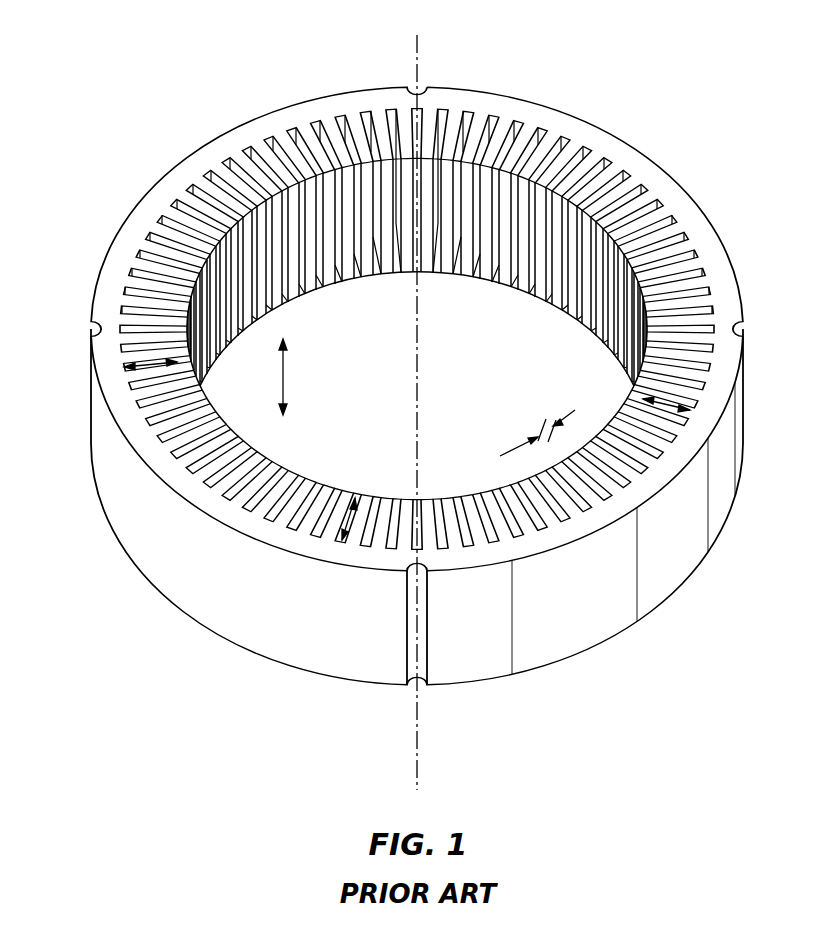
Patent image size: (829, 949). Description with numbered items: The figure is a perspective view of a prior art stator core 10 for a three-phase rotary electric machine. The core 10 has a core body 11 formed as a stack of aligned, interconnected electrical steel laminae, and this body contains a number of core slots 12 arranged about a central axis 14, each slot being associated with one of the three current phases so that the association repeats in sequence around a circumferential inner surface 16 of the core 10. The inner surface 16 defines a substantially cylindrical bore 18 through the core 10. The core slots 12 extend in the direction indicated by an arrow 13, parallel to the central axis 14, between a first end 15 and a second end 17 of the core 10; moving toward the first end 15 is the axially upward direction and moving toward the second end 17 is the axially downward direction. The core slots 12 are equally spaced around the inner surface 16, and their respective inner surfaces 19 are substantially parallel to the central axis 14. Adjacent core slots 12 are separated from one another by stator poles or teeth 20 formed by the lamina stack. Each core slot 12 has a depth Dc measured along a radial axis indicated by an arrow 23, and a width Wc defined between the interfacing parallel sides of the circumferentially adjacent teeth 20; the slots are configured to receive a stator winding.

The stator core 10 is at (136, 72).
The core body 11 is at (303, 640).
The core slots 12 is at (127, 250).
The arrow 13 is at (285, 378).
The central axis 14 is at (430, 714).
The first end 15 is at (587, 143).
The circumferential inner surface 16 is at (369, 246).
The second end 17 is at (636, 628).
The bore 18 is at (455, 371).
The inner surfaces of the core slots 19 is at (150, 390).
The teeth 20 is at (300, 163).
The arrow 23 is at (647, 130).
The depth of the core slot Dc is at (770, 385).
The width of the core slot Wc is at (552, 418).